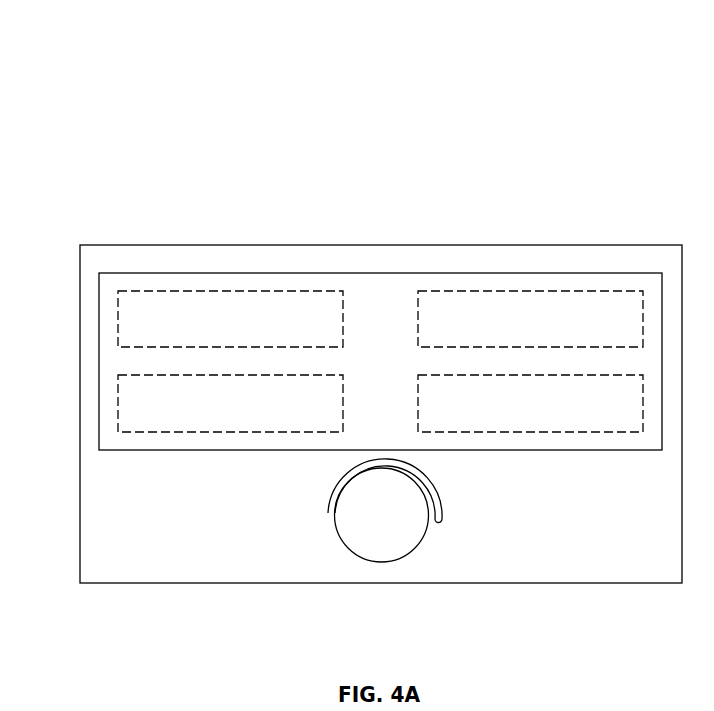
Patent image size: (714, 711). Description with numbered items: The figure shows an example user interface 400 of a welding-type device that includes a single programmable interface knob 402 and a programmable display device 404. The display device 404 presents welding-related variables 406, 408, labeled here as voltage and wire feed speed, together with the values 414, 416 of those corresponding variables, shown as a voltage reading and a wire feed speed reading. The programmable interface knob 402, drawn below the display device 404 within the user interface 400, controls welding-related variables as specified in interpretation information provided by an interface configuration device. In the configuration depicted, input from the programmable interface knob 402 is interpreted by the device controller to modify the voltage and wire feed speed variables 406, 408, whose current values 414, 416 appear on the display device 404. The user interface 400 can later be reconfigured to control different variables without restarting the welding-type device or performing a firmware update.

The user interface 400 is at (84, 199).
The programmable interface knob 402 is at (342, 540).
The programmable display device 404 is at (172, 451).
The welding-related variable 406 is at (277, 291).
The welding-related variable 408 is at (464, 291).
The value of welding-related variable 414 is at (258, 433).
The value of welding-related variable 416 is at (559, 433).